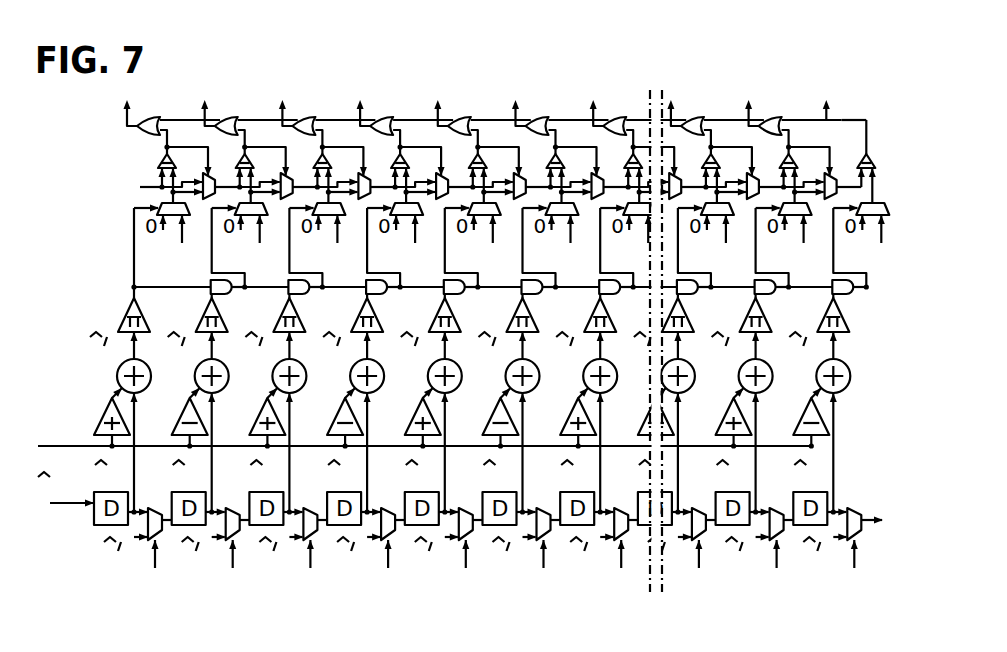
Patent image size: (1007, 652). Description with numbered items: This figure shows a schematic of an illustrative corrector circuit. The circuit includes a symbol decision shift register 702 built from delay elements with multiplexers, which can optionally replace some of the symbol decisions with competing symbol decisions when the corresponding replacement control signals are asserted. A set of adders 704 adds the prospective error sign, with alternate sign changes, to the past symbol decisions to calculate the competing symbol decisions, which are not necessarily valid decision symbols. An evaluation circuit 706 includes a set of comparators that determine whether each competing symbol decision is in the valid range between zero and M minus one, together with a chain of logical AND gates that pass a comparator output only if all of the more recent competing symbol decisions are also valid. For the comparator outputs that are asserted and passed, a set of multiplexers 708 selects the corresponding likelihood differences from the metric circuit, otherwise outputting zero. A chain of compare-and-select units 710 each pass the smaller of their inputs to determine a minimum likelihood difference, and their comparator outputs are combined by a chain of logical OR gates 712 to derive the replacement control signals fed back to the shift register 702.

The symbol decision shift register 702 is at (898, 457).
The set of adders 704 is at (898, 348).
The evaluation circuit 706 is at (898, 270).
The set of multiplexers 708 is at (898, 200).
The chain of compare-and-select units 710 is at (898, 148).
The chain of logical OR gates 712 is at (898, 98).